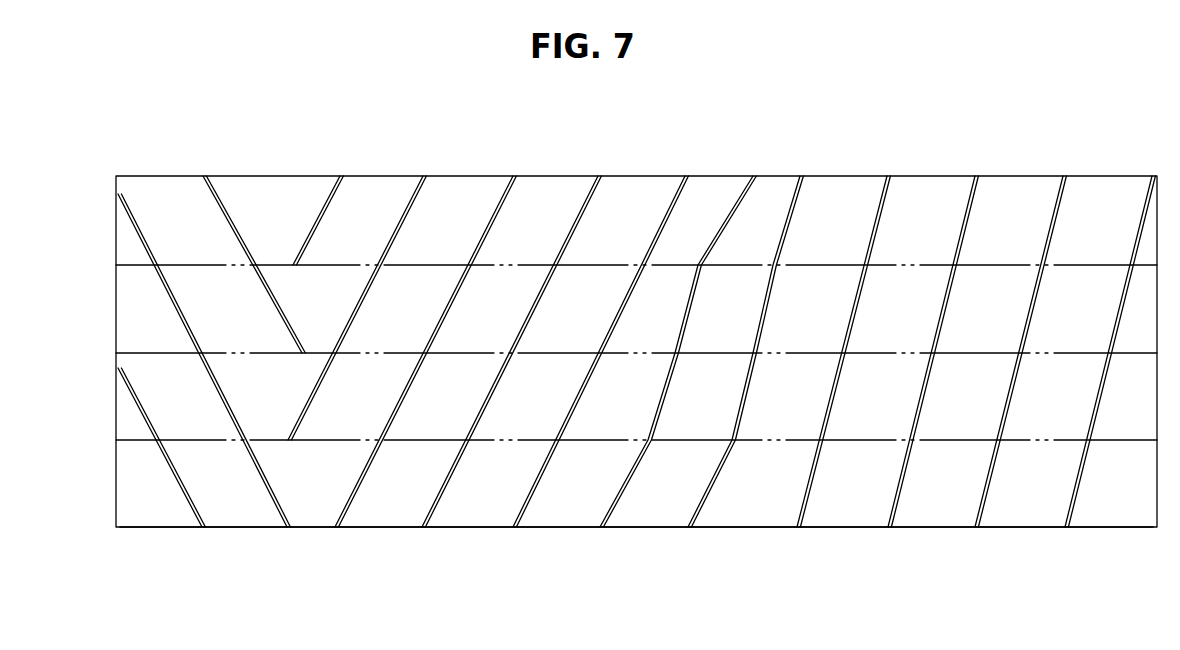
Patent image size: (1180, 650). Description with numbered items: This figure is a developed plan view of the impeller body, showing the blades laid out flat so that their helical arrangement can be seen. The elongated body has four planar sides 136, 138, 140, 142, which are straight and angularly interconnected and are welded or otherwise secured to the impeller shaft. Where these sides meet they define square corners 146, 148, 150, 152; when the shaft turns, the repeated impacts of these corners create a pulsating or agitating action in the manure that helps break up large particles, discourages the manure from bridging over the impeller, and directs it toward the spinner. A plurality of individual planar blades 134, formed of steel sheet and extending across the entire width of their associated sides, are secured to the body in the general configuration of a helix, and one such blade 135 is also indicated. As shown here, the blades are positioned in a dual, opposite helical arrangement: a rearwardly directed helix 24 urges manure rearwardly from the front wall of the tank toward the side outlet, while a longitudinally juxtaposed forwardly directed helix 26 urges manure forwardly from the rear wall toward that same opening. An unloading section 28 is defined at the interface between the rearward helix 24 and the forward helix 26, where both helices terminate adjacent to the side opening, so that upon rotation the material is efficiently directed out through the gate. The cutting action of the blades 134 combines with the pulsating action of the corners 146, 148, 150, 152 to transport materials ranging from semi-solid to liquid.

The rearwardly directed helix 24 is at (166, 165).
The forwardly directed helix 26 is at (629, 166).
The unloading section 28 is at (342, 168).
The planar blades 134 is at (600, 351).
The reinforcing strip 135 is at (408, 393).
The planar side 136 is at (125, 477).
The planar side 138 is at (125, 240).
The planar side 140 is at (123, 325).
The planar side 142 is at (123, 410).
The square corner 146 is at (252, 176).
The square corner 148 is at (187, 265).
The square corner 150 is at (230, 353).
The square corner 152 is at (190, 440).